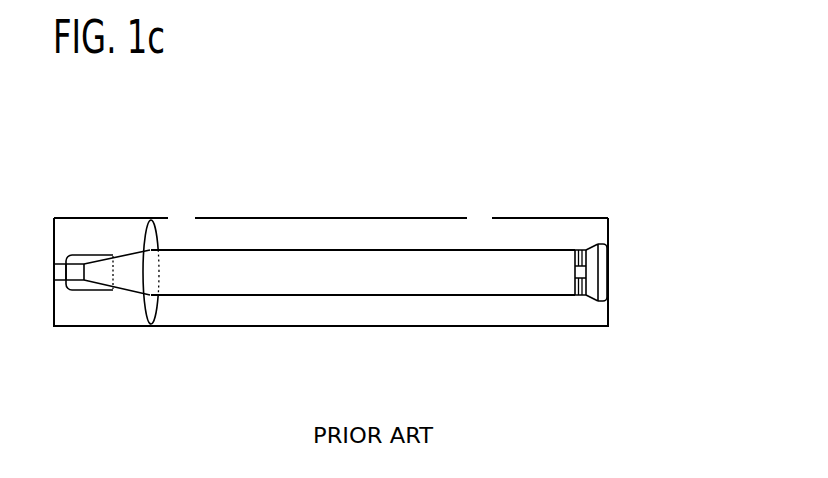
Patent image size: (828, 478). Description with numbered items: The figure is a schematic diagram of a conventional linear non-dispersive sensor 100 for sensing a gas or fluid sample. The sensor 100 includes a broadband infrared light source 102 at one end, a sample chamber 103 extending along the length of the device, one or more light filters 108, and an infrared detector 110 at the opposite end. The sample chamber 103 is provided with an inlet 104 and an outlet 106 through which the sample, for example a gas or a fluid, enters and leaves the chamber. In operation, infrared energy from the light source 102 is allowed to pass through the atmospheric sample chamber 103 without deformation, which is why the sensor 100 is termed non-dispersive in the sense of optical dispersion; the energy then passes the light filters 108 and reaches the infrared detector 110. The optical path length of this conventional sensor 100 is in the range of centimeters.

The linear non-dispersive sensor 100 is at (371, 192).
The broadband infrared light source 102 is at (95, 310).
The sample chamber 103 is at (356, 314).
The inlet 104 is at (195, 198).
The outlet 106 is at (492, 197).
The light filter 108 is at (560, 260).
The infrared detector 110 is at (611, 269).